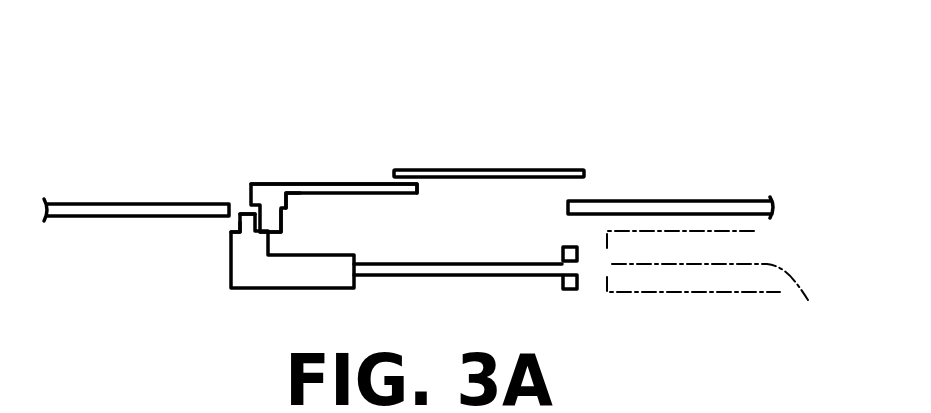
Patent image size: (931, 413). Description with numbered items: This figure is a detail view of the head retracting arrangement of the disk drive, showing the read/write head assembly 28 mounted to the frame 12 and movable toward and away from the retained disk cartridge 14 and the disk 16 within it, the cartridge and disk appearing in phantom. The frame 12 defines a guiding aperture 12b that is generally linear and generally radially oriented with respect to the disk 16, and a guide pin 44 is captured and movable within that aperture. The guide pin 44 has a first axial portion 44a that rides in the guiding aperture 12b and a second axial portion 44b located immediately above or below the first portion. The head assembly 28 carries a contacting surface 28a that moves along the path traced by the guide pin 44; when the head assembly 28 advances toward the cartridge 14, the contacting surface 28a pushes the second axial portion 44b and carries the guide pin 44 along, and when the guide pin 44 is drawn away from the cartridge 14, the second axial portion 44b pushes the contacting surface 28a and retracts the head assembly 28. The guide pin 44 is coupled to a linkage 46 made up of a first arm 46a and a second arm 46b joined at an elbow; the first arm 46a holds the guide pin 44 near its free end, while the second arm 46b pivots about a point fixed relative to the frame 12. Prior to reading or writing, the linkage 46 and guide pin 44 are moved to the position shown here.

The frame 12 is at (140, 205).
The guiding aperture 12b is at (243, 205).
The disk cartridge 14 is at (677, 292).
The disk 16 is at (722, 283).
The read/write head assembly 28 is at (357, 279).
The contacting surface 28a is at (233, 240).
The guide pin 44 is at (334, 176).
The first axial portion 44a is at (290, 210).
The second axial portion 44b is at (282, 227).
The linkage 46 is at (451, 135).
The first arm 46a is at (366, 182).
The second arm 46b is at (563, 166).